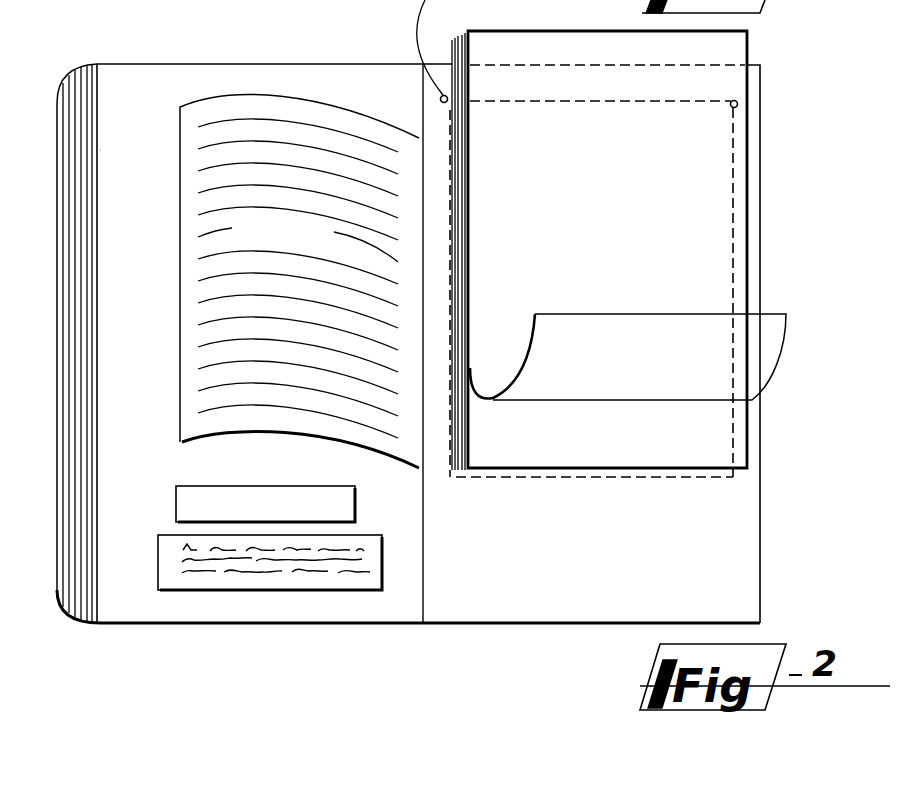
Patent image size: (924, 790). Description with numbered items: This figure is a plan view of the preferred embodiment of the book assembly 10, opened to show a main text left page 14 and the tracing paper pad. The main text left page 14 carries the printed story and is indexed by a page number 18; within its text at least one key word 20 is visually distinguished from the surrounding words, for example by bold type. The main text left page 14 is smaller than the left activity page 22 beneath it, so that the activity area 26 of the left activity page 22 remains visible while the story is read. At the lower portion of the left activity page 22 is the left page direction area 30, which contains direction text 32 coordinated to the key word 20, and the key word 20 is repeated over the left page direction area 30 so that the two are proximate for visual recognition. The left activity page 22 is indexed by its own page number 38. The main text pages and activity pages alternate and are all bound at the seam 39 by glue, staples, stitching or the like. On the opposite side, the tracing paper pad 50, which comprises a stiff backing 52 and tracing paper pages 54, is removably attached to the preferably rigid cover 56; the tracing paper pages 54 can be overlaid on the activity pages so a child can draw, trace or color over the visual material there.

The book assembly 10 is at (315, 0).
The main text left page 14 is at (201, 115).
The page number 18 is at (185, 415).
The key word 20 is at (237, 230).
The left activity page 22 is at (117, 88).
The activity area 26 is at (154, 328).
The left page direction area 30 is at (196, 590).
The direction text 32 is at (283, 577).
The page number 38 is at (132, 623).
The seam 39 is at (438, 97).
The tracing paper pad 50 is at (630, 487).
The stiff backing 52 is at (538, 480).
The tracing paper pages 54 is at (603, 312).
The cover 56 is at (713, 542).